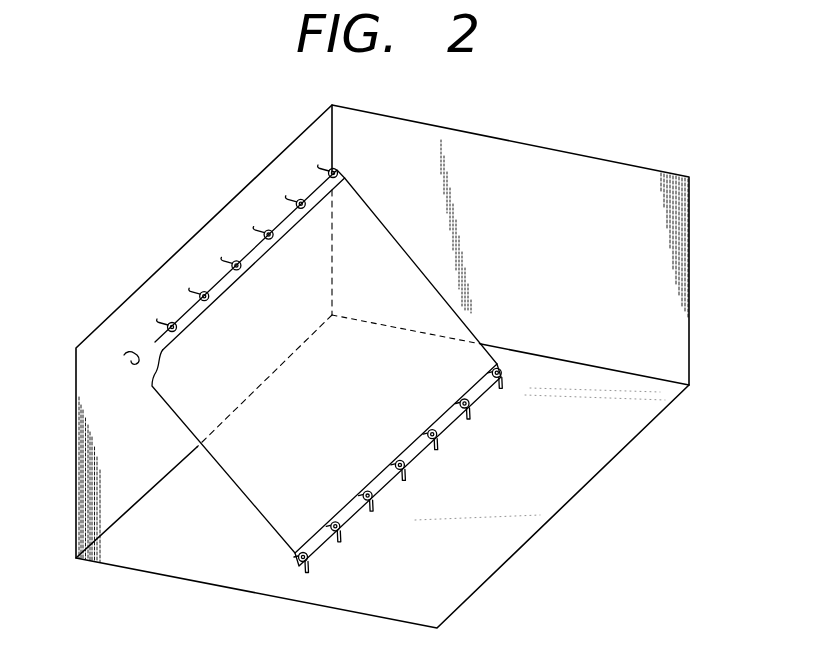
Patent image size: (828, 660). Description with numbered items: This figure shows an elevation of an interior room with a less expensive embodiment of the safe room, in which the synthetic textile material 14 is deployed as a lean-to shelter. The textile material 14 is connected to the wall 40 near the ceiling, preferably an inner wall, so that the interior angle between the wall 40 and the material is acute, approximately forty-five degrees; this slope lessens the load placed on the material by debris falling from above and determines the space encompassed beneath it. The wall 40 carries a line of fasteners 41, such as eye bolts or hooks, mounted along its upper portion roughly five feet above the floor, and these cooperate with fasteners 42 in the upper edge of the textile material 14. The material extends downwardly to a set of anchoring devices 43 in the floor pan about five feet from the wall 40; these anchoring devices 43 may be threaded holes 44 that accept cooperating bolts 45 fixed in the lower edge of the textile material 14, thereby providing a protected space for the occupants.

The wall 40 is at (130, 478).
The textile material 14 is at (192, 393).
The fasteners 41 is at (130, 351).
The fasteners 42 is at (234, 262).
The anchoring devices 43 is at (353, 540).
The threaded holes 44 is at (296, 573).
The bolts 45 is at (458, 433).